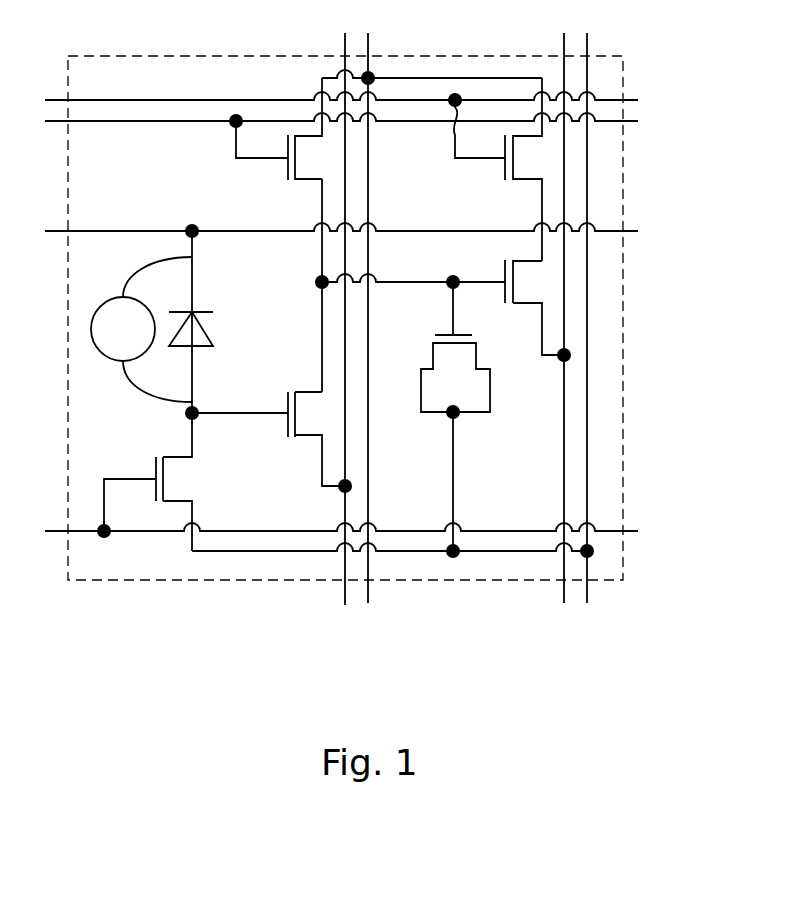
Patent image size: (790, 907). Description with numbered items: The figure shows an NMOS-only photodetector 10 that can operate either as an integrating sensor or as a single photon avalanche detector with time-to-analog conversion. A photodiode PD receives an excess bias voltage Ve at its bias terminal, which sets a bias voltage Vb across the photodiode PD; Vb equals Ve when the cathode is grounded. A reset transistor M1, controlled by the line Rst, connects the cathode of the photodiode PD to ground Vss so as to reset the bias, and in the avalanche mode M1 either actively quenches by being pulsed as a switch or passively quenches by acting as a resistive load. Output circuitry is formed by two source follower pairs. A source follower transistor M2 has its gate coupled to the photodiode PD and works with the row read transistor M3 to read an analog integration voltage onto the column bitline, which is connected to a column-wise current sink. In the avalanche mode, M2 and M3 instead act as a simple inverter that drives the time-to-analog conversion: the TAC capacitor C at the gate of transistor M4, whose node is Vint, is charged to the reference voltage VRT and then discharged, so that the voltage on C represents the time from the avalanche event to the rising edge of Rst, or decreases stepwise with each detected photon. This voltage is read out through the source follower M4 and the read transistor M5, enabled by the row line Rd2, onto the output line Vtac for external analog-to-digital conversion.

The photodetector 10 is at (623, 180).
The second read line Rd2 is at (173, 100).
The excess bias voltage Ve is at (84, 231).
The voltage reference top VRT is at (368, 50).
The ground Vss is at (587, 43).
The TAC output line Vtac is at (564, 585).
The reset line Rst is at (341, 550).
The integration node Vint is at (322, 313).
The reset transistor M1 is at (151, 478).
The source follower transistor M2 is at (272, 442).
The row read transistor M3 is at (279, 142).
The source follower transistor M4 is at (529, 311).
The read transistor M5 is at (498, 169).
The TAC capacitor C is at (432, 357).
The photodiode PD is at (214, 322).
The bias voltage Vb is at (141, 329).